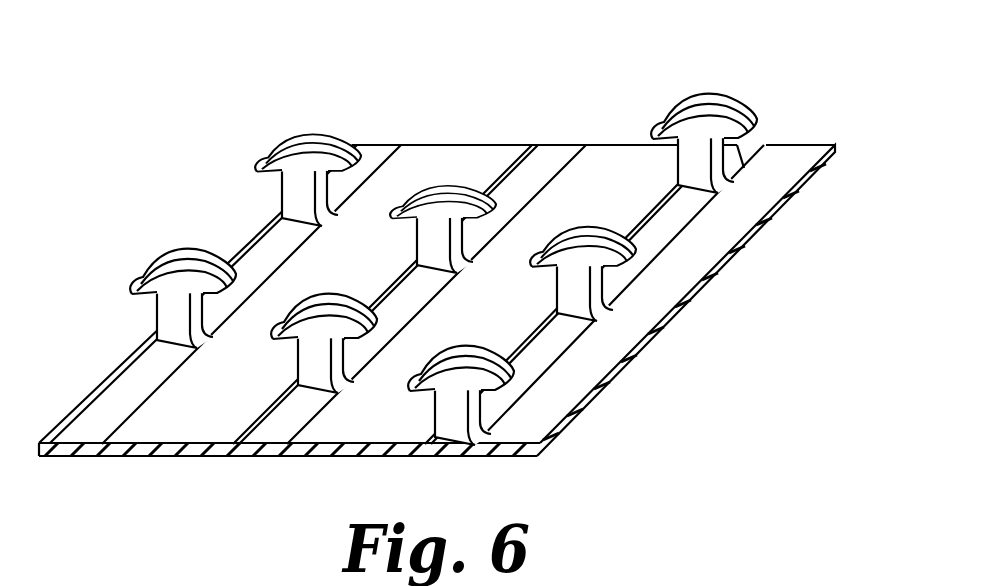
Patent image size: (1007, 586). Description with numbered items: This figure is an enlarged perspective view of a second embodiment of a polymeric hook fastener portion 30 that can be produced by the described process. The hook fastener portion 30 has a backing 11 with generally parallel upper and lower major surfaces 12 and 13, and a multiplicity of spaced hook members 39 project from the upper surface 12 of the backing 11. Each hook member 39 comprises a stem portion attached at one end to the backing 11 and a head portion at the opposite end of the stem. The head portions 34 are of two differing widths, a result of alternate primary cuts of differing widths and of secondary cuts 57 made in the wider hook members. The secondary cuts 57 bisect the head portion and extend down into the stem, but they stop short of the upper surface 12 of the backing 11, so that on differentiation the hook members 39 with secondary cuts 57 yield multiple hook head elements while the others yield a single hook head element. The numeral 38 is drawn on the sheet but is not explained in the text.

The backing 11 is at (437, 334).
The upper surface 12 is at (160, 426).
The lower major surface 13 is at (190, 459).
The hook fastener portion 30 is at (588, 60).
The head portions 34 is at (735, 100).
The stem of projection 38 is at (146, 265).
The hook members 39 is at (297, 120).
The secondary cuts 57 is at (182, 255).